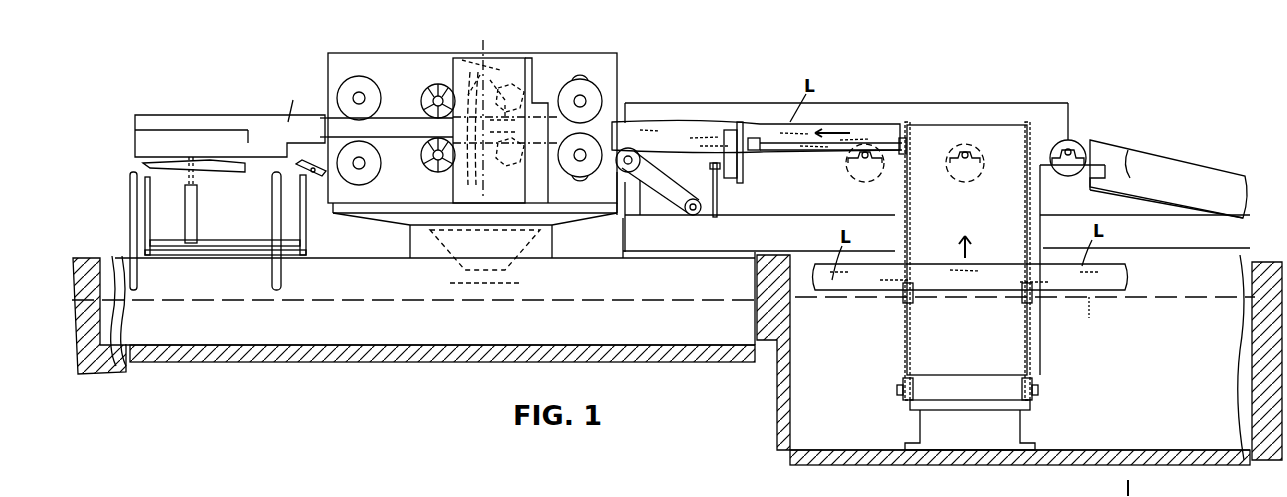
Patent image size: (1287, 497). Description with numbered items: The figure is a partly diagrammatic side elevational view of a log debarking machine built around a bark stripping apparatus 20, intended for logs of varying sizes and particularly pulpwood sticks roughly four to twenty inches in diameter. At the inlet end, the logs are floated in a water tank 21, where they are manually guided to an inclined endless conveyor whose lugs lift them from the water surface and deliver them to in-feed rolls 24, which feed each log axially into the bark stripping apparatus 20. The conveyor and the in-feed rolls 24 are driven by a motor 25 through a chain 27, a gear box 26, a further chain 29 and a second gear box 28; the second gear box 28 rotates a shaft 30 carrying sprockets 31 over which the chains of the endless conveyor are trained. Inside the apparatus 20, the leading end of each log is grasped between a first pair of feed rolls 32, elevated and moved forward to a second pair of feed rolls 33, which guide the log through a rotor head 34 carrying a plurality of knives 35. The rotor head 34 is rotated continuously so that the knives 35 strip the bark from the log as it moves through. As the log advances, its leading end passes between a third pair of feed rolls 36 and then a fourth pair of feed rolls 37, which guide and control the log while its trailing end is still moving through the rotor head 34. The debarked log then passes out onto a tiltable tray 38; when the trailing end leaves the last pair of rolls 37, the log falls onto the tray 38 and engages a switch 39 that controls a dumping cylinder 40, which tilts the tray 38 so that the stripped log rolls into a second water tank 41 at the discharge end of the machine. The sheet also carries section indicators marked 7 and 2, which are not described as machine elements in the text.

The bark stripping apparatus 20 is at (558, 55).
The water tank 21 is at (790, 396).
The in-feed rolls 24 is at (885, 170).
The motor 25 is at (637, 147).
The gear box 26 is at (668, 215).
The chain 27 is at (648, 190).
The second gear box 28 is at (742, 178).
The chain 29 is at (719, 217).
The shaft 30 is at (806, 152).
The sprockets 31 is at (912, 134).
The first pair of feed rolls 32 is at (594, 95).
The second pair of feed rolls 33 is at (486, 47).
The rotor head 34 is at (463, 74).
The knives 35 is at (451, 176).
The third pair of feed rolls 36 is at (433, 86).
The fourth pair of feed rolls 37 is at (353, 78).
The tiltable tray 38 is at (140, 147).
The switch 39 is at (310, 181).
The dumping cylinder 40 is at (196, 212).
The second water tank 41 is at (172, 356).
The section line 7 is at (487, 200).
The section line 2 is at (1085, 64).